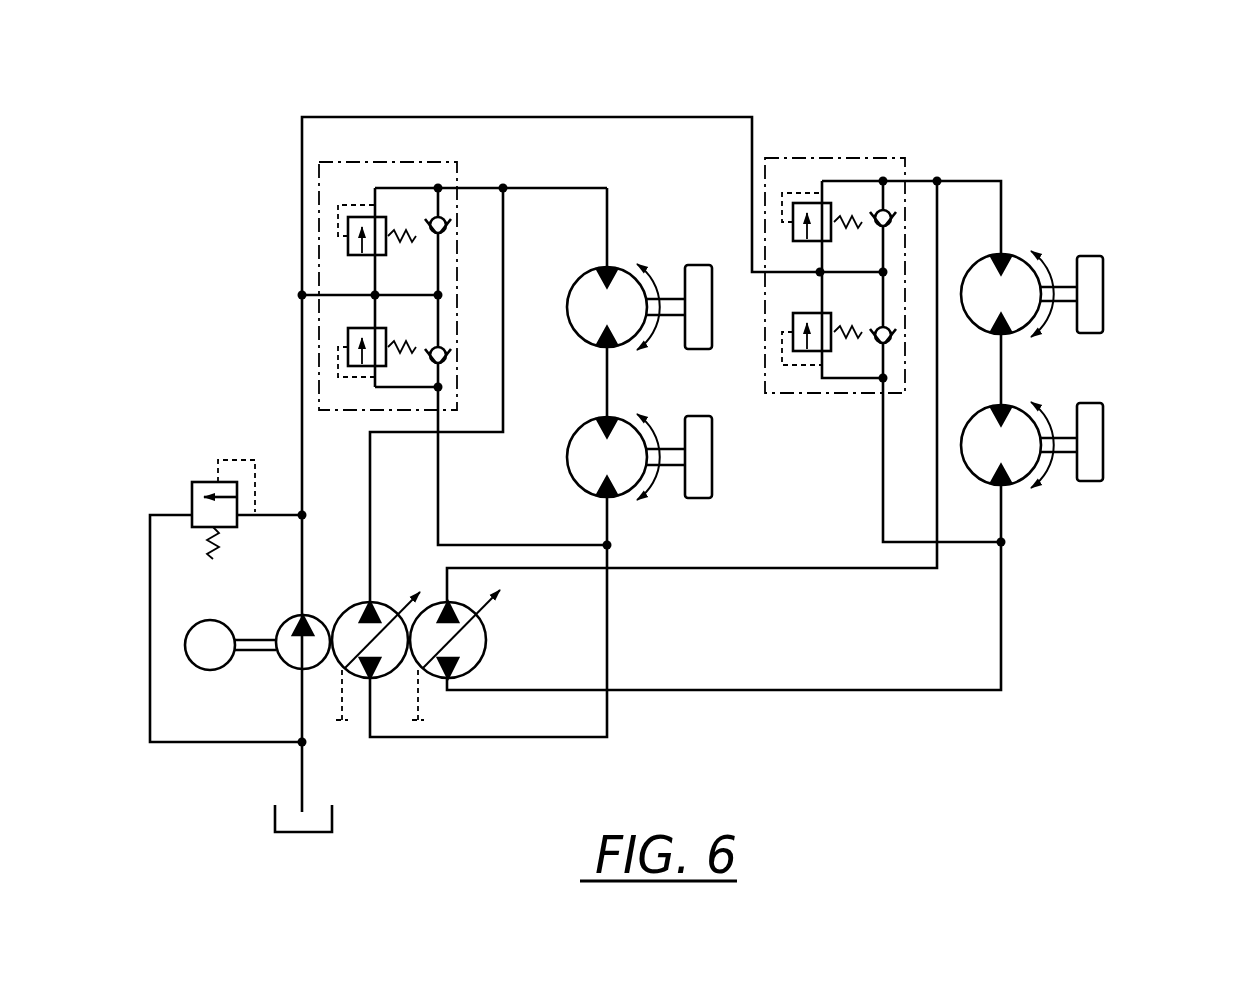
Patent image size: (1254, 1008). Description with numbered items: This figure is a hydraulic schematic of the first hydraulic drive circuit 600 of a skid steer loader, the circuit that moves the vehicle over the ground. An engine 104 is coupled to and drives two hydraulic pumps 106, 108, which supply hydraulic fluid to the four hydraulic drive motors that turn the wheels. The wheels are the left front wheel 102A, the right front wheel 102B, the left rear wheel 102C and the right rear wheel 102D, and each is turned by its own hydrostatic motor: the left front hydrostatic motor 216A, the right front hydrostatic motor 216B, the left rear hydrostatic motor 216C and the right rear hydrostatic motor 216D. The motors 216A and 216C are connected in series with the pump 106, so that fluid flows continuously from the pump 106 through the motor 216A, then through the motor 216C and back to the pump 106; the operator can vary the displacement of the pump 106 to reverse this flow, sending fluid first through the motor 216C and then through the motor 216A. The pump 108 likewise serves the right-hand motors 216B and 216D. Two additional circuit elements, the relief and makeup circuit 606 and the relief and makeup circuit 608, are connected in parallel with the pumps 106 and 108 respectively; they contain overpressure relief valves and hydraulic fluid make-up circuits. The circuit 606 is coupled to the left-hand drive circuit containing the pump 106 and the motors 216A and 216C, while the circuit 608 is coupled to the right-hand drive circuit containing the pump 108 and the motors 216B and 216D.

The first hydraulic drive circuit 600 is at (243, 381).
The relief and makeup circuit 606 is at (456, 162).
The relief and makeup circuit 608 is at (905, 158).
The left front hydrostatic motor 216A is at (578, 277).
The right front hydrostatic motor 216B is at (1021, 252).
The left rear hydrostatic motor 216C is at (575, 468).
The right rear hydrostatic motor 216D is at (1024, 480).
The left front wheel 102A is at (695, 262).
The right front wheel 102B is at (1106, 256).
The left rear wheel 102C is at (714, 497).
The right rear wheel 102D is at (1106, 428).
The engine 104 is at (232, 583).
The hydraulic pump 106 is at (372, 680).
The hydraulic pump 108 is at (487, 654).